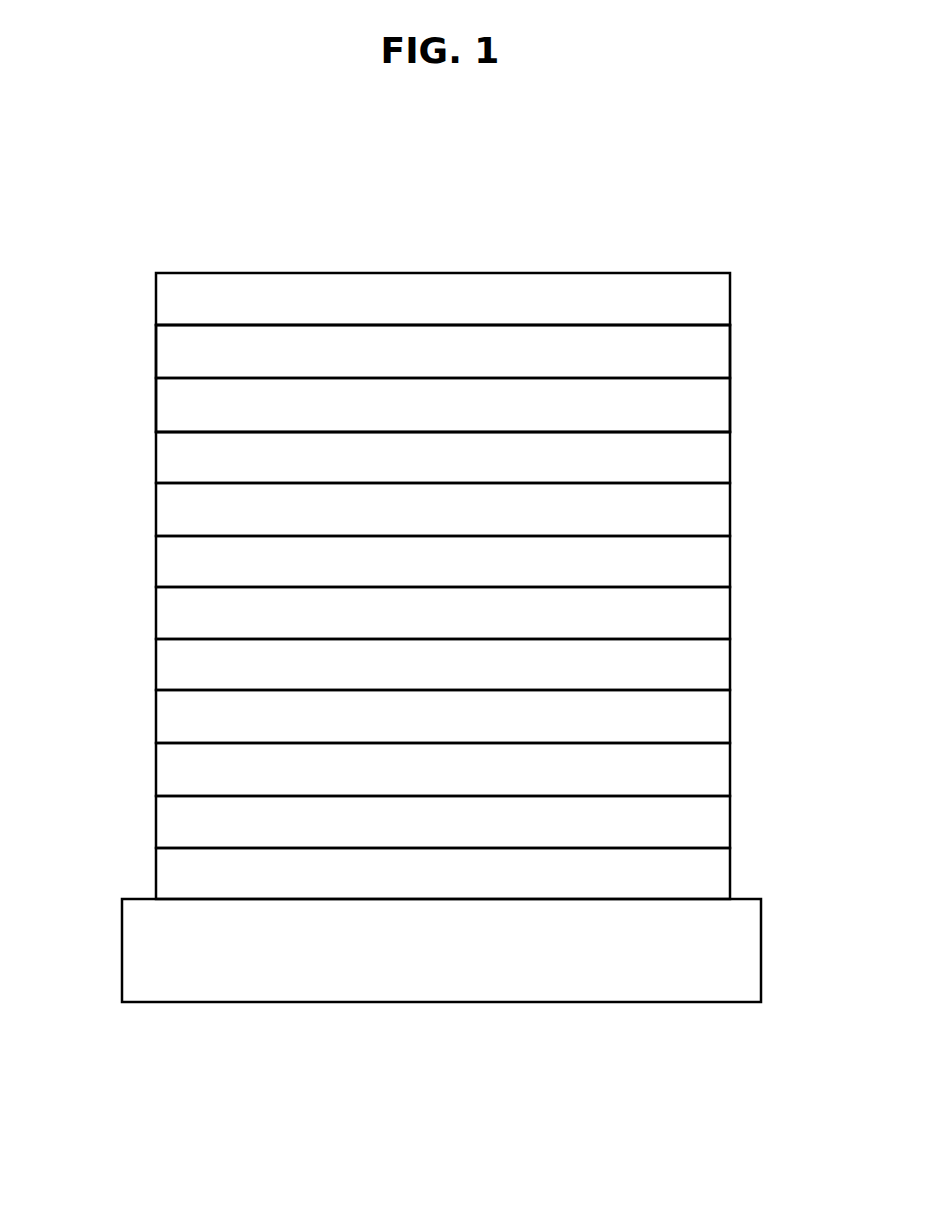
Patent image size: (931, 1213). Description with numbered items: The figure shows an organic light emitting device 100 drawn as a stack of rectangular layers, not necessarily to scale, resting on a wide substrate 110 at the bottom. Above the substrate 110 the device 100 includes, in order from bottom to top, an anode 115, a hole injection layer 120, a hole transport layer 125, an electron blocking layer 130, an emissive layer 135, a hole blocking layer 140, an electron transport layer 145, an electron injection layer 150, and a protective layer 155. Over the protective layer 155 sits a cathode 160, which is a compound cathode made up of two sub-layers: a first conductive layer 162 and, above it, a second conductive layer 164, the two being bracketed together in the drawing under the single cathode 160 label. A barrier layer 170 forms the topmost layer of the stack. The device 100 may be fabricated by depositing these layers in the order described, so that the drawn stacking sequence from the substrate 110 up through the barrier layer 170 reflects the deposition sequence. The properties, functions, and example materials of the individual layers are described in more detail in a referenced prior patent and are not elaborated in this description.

The organic light emitting device 100 is at (291, 226).
The substrate 110 is at (400, 1004).
The anode 115 is at (156, 873).
The hole injection layer 120 is at (156, 820).
The hole transport layer 125 is at (156, 769).
The electron blocking layer 130 is at (156, 716).
The emissive layer 135 is at (156, 663).
The hole blocking layer 140 is at (156, 613).
The electron transport layer 145 is at (156, 562).
The electron injection layer 150 is at (156, 508).
The protective layer 155 is at (156, 459).
The cathode 160 is at (156, 352).
The first conductive layer 162 is at (730, 404).
The second conductive layer 164 is at (730, 351).
The barrier layer 170 is at (156, 300).